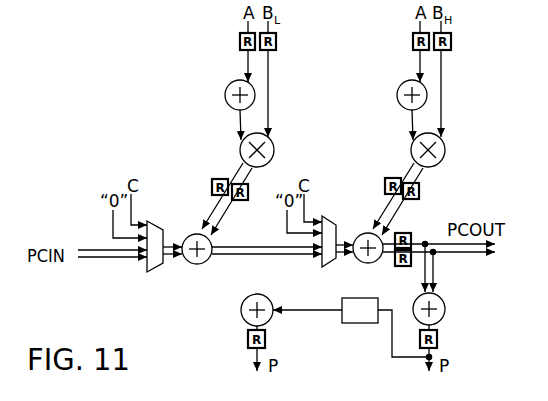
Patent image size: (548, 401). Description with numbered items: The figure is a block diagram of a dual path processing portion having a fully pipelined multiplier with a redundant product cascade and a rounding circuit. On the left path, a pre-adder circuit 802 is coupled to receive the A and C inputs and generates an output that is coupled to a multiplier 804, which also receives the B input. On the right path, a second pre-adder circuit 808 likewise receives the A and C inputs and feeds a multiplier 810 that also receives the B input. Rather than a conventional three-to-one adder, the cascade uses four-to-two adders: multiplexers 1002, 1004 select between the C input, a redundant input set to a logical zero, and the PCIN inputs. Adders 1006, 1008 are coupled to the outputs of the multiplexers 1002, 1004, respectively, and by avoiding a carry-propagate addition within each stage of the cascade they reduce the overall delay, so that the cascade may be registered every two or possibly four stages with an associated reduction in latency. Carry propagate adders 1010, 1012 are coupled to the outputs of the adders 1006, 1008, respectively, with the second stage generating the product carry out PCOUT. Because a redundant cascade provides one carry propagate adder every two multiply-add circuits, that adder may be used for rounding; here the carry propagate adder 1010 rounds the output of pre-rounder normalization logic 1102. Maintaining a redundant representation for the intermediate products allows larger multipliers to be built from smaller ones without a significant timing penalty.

The pre-adder circuit 802 is at (254, 86).
The multiplier 804 is at (274, 150).
The second pre-adder circuit 808 is at (426, 86).
The multiplier 810 is at (445, 150).
The multiplexer 1002 is at (158, 222).
The multiplexer 1004 is at (186, 264).
The adder 1006 is at (336, 220).
The adder 1008 is at (365, 263).
The carry propagate adder 1010 is at (271, 297).
The carry propagate adder 1012 is at (446, 300).
The pre-rounder normalization logic 1102 is at (356, 323).